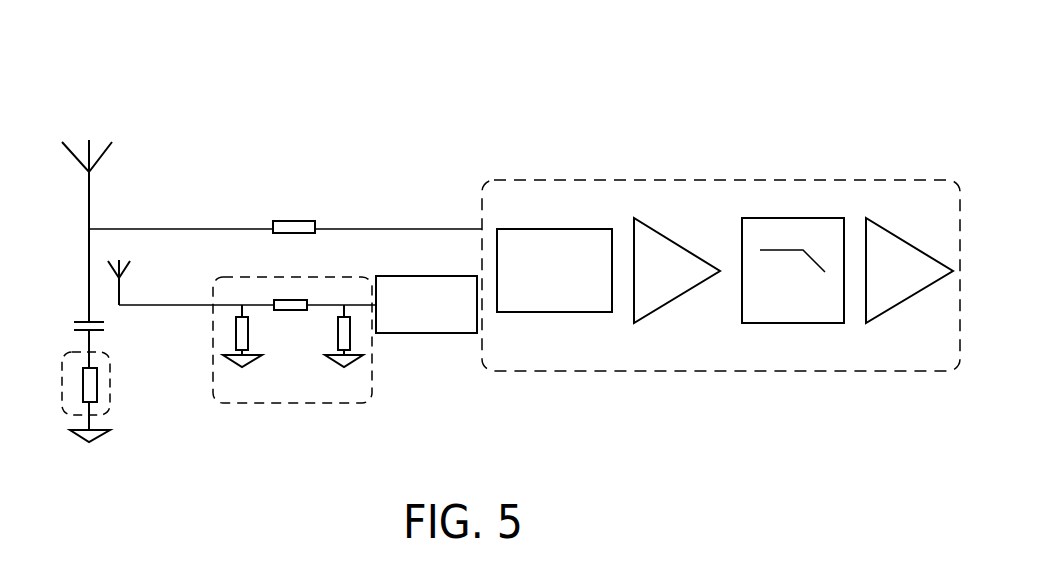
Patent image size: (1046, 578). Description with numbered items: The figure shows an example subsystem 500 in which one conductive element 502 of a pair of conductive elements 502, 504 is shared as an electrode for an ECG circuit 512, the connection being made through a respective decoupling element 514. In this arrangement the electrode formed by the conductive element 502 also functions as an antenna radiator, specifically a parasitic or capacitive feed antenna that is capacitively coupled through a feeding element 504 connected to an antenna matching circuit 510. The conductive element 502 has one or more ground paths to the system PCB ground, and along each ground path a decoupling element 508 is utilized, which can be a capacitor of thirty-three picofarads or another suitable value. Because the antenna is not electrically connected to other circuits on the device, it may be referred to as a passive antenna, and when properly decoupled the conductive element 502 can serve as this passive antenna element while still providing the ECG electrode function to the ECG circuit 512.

The subsystem 500 is at (504, 271).
The conductive element 502 is at (131, 125).
The feeding element 504 is at (148, 250).
The decoupling element 508 is at (68, 301).
The antenna matching circuit 510 is at (124, 414).
The ECG circuit 512 is at (681, 156).
The decoupling element 514 is at (341, 205).